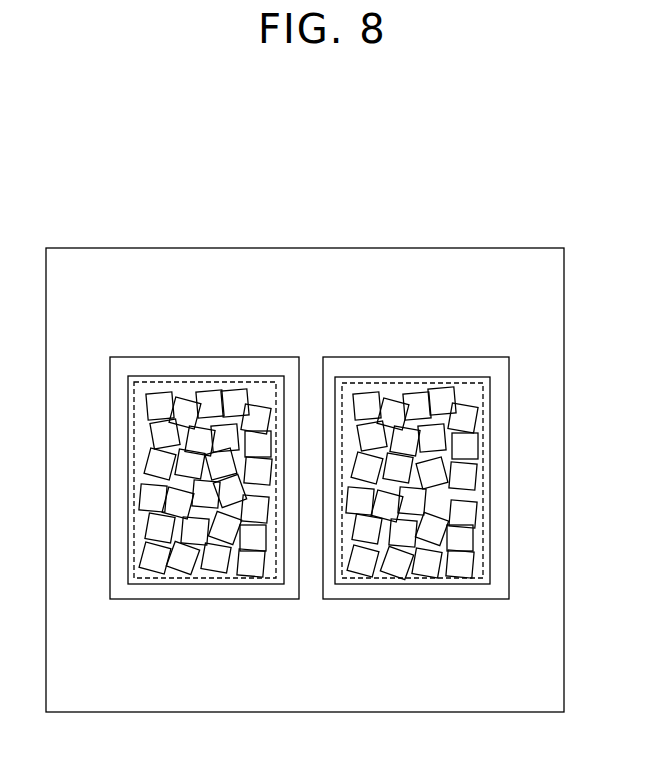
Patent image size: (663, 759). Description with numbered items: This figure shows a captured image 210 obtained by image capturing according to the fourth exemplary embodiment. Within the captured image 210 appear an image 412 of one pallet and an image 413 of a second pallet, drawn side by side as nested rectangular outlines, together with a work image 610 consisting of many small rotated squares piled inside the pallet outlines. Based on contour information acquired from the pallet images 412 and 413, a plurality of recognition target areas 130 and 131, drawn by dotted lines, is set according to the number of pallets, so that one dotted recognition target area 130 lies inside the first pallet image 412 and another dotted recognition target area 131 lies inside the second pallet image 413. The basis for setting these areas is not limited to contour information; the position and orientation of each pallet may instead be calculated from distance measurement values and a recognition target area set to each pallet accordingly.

The captured image 210 is at (337, 248).
The image of the pallet 412 is at (193, 357).
The image of the pallet 413 is at (418, 357).
The recognition target area 130 is at (174, 584).
The recognition target area 131 is at (458, 584).
The work image 610 is at (390, 566).